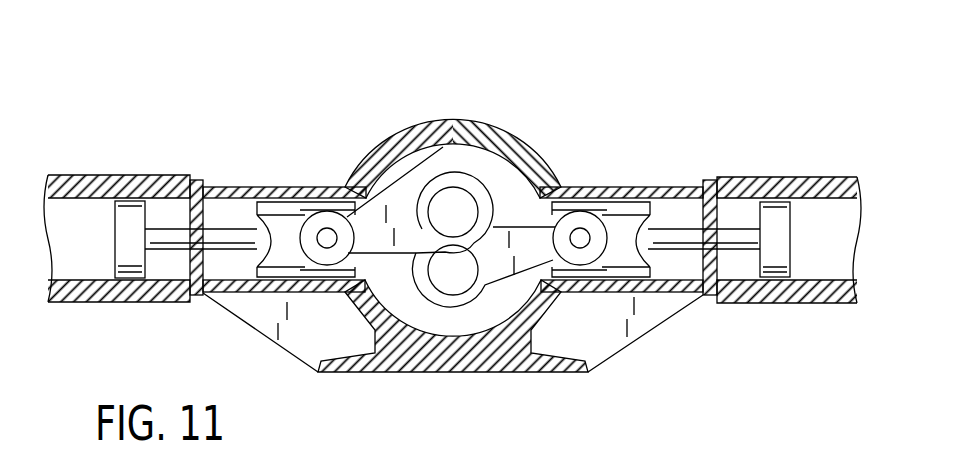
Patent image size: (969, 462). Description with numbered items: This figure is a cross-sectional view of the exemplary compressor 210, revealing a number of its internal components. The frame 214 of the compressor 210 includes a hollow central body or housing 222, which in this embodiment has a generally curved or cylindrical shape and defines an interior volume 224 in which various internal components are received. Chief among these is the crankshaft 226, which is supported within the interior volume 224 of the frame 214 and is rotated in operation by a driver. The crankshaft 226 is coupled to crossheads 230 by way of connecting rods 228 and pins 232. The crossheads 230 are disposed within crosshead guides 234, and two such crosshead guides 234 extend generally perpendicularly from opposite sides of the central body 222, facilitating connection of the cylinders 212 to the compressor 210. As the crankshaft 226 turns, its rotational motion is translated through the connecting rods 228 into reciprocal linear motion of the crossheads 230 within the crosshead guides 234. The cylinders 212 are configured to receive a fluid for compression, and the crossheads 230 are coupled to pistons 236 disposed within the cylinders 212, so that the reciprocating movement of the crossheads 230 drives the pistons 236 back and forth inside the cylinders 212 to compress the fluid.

The compressor 210 is at (521, 78).
The cylinders 212 is at (152, 175).
The frame 214 is at (497, 130).
The central body 222 is at (395, 133).
The interior volume 224 is at (450, 158).
The crankshaft 226 is at (453, 212).
The connecting rods 228 is at (366, 311).
The crossheads 230 is at (272, 188).
The pins 232 is at (327, 238).
The crosshead guides 234 is at (206, 294).
The pistons 236 is at (133, 233).